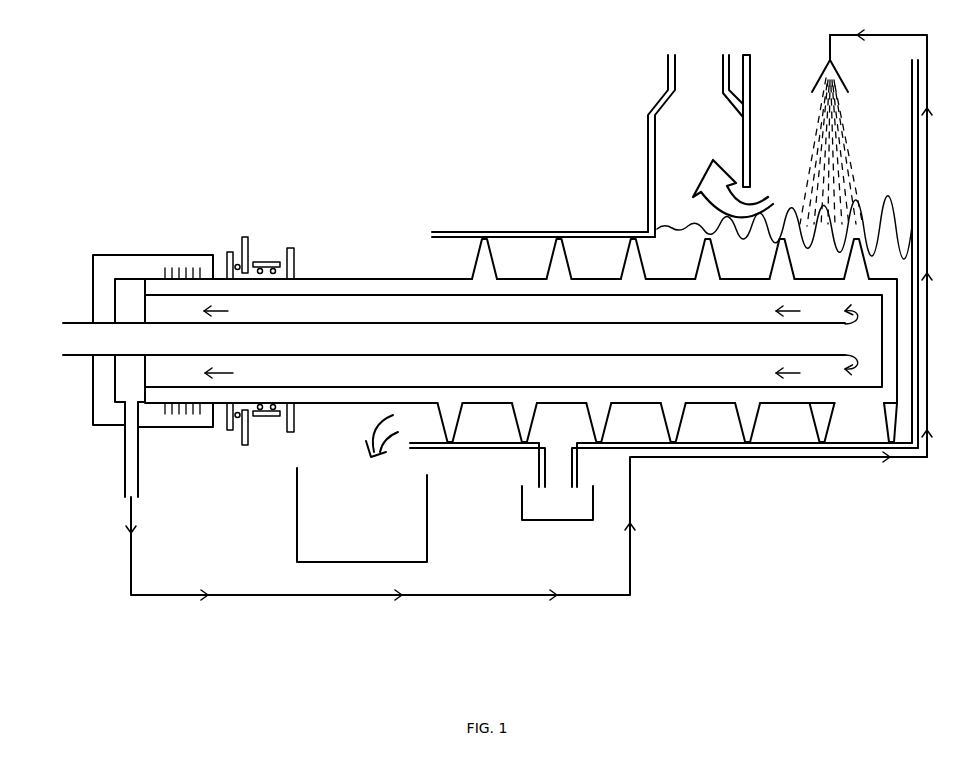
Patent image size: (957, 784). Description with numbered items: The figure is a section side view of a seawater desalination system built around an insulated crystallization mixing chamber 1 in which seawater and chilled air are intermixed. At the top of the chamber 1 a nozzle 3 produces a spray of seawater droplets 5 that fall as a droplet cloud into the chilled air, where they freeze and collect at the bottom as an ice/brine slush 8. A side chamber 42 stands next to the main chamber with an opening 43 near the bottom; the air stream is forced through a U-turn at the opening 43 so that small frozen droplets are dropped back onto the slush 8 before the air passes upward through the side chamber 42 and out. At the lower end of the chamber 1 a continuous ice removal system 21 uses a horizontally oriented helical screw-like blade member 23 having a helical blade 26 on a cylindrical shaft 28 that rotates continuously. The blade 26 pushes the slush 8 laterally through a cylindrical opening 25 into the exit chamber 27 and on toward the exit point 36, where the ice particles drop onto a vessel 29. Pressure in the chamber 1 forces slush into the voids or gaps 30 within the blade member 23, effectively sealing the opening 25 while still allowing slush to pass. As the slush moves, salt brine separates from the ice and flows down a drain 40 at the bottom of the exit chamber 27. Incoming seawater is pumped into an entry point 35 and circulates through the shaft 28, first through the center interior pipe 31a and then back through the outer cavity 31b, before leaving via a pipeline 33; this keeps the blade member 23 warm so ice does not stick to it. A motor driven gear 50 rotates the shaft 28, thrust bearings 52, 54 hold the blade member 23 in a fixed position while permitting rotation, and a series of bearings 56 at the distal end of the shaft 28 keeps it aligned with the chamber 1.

The crystallization mixing chamber 1 is at (786, 49).
The nozzle 3 is at (848, 73).
The spray of seawater droplets 5 is at (859, 139).
The ice/brine slush 8 is at (877, 221).
The continuous ice removal system 21 is at (381, 197).
The helical screw-like blade member 23 is at (316, 243).
The cylindrical opening 25 is at (661, 261).
The helical blade 26 is at (547, 258).
The exit chamber 27 is at (441, 254).
The cylindrical shaft 28 is at (398, 279).
The vessel 29 is at (430, 534).
The voids or gaps 30 is at (585, 347).
The center interior pipe 31a is at (531, 356).
The outer cavity 31b is at (531, 317).
The pipeline 33 is at (135, 556).
The entry point 35 is at (60, 347).
The exit point 36 is at (367, 436).
The drain 40 is at (664, 481).
The side chamber 42 is at (652, 102).
The opening 43 is at (765, 198).
The motor driven gear 50 is at (286, 433).
The thrust bearing 52 is at (231, 252).
The thrust bearing 54 is at (265, 262).
The series of bearings 56 is at (165, 270).